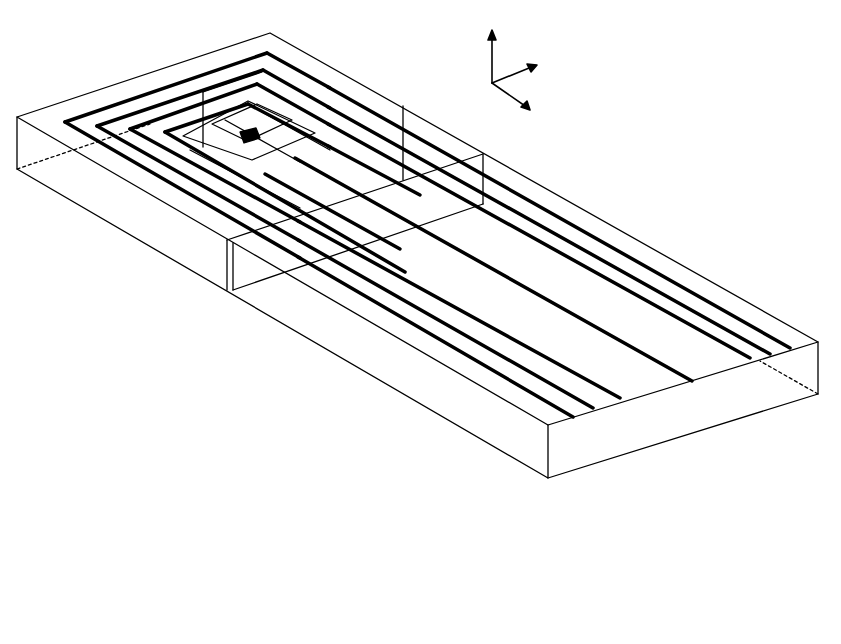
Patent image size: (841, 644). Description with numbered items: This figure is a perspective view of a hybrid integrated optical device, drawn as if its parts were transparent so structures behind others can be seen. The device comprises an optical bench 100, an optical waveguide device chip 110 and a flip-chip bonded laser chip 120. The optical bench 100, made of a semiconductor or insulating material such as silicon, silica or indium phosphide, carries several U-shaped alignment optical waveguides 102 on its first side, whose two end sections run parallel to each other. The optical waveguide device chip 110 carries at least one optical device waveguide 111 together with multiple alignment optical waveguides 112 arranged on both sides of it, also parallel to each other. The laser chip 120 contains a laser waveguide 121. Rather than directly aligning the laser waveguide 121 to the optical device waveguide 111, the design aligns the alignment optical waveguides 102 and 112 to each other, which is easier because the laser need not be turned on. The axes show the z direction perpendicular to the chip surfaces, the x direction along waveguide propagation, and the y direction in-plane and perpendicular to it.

The optical bench 100 is at (127, 90).
The alignment optical waveguides 102 is at (311, 79).
The optical waveguide device chip 110 is at (588, 217).
The optical device waveguide 111 is at (603, 330).
The alignment optical waveguides 112 is at (396, 268).
The flip-chip bonded laser chip 120 is at (403, 106).
The laser waveguide 121 is at (330, 197).